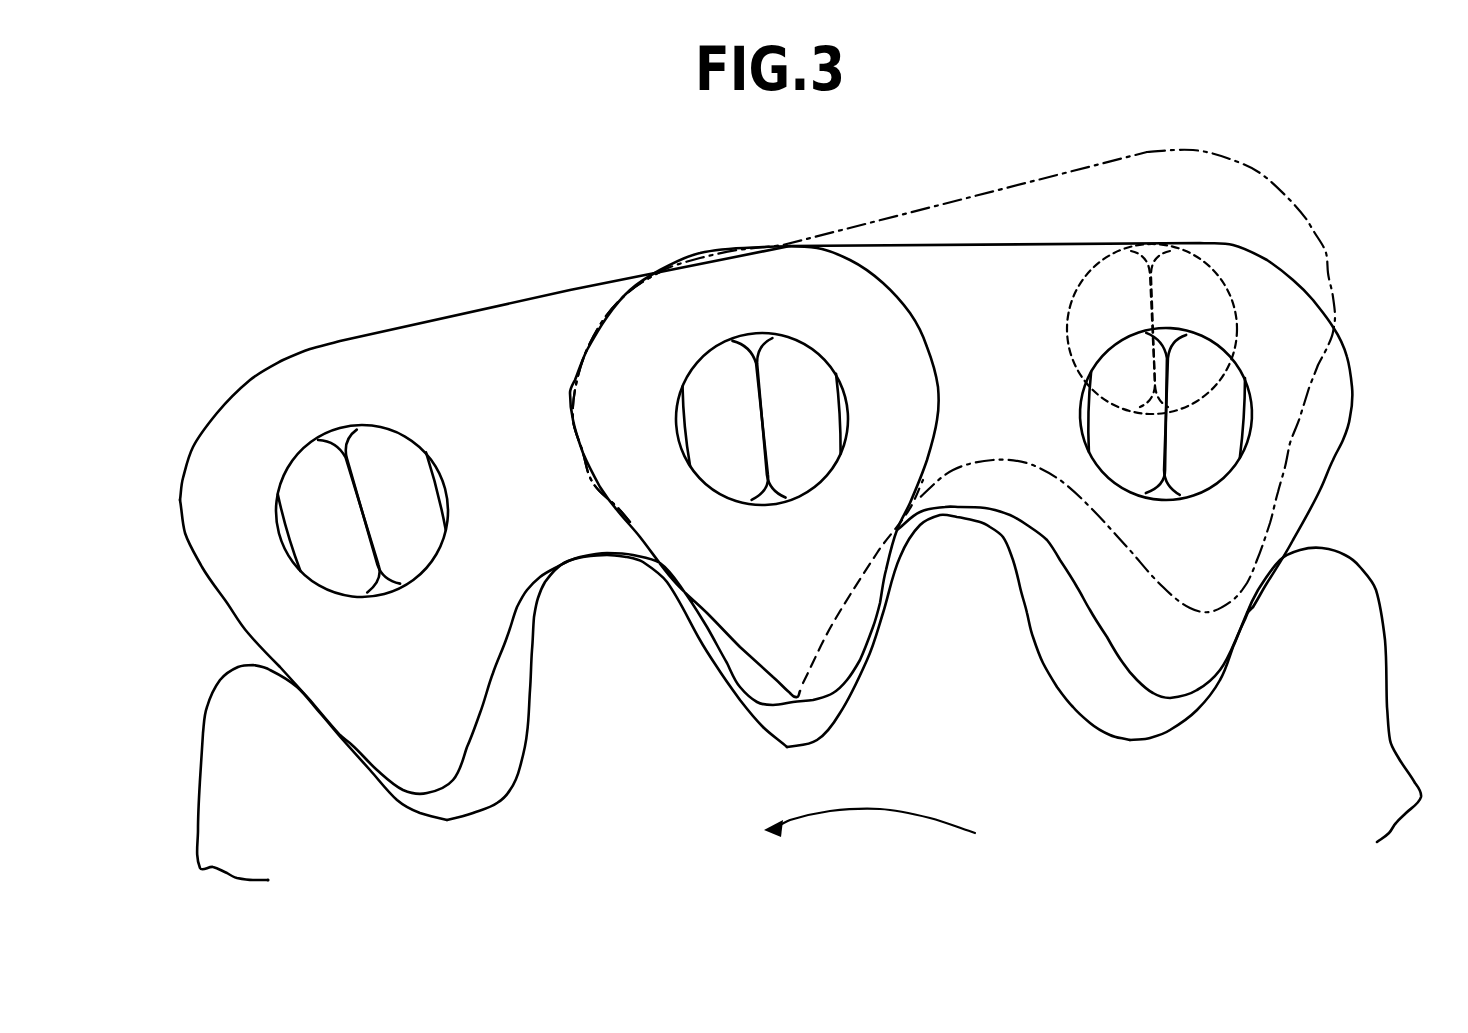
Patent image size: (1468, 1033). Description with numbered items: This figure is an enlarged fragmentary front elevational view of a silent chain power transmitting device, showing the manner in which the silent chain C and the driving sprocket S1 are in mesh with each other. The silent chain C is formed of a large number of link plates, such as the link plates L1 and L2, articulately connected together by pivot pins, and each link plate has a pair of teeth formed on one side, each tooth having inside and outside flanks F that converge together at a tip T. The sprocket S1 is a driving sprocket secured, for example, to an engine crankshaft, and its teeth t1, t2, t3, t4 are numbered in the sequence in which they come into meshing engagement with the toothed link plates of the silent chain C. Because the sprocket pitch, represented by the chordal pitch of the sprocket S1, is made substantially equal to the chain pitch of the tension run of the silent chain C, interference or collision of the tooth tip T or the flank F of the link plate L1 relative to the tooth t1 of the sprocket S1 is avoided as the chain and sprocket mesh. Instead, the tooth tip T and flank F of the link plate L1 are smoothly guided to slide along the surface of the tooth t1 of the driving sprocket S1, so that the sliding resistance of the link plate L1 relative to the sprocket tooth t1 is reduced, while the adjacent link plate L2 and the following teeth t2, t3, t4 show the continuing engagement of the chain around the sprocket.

The link plate L1 is at (983, 270).
The link plate L2 is at (430, 343).
The silent chain C is at (595, 279).
The flank F is at (1320, 490).
The tip T is at (1247, 610).
The sprocket S1 is at (809, 697).
The tooth t1 is at (1337, 625).
The tooth t2 is at (978, 593).
The tooth t3 is at (630, 636).
The tooth t4 is at (270, 746).